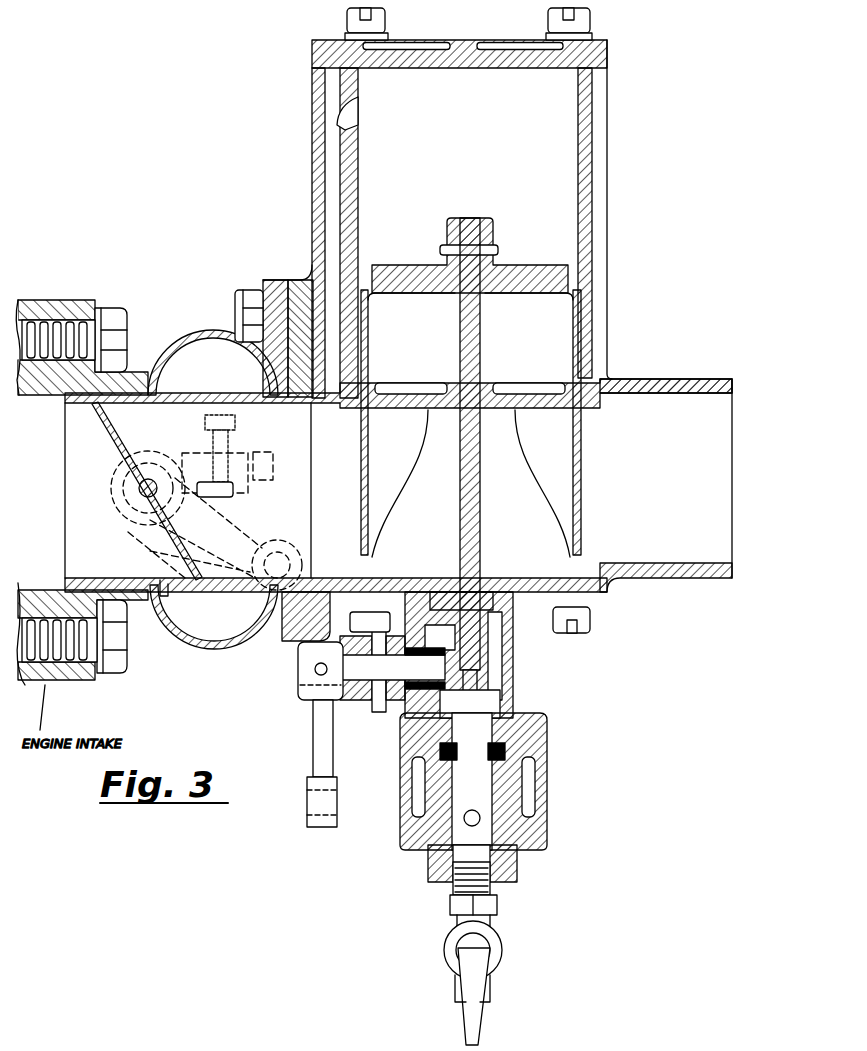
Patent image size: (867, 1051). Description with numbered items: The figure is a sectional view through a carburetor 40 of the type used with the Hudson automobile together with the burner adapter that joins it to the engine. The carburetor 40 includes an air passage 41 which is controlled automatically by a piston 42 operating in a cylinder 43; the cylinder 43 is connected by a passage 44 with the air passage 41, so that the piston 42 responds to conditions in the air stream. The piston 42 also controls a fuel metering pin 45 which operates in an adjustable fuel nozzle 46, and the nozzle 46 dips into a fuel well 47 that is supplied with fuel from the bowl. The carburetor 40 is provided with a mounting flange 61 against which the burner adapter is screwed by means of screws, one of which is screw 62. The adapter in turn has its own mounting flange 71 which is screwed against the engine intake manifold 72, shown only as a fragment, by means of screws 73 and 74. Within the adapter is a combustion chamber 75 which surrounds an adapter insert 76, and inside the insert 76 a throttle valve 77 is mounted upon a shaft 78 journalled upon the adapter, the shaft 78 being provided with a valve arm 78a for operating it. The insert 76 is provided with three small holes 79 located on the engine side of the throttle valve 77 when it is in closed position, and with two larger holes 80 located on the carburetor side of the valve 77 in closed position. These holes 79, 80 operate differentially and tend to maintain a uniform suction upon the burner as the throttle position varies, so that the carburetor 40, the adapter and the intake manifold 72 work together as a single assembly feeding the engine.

The carburetor 40 is at (667, 242).
The air passage 41 is at (712, 433).
The piston 42 is at (530, 267).
The cylinder 43 is at (562, 128).
The passage 44 is at (332, 162).
The fuel metering pin 45 is at (483, 518).
The adjustable fuel nozzle 46 is at (449, 569).
The fuel well 47 is at (527, 813).
The mounting flange 61 is at (307, 627).
The screw 62 is at (246, 304).
The mounting flange 71 is at (88, 678).
The engine intake manifold 72 is at (40, 680).
The screw 73 is at (116, 338).
The screw 74 is at (117, 665).
The combustion chamber 75 is at (215, 622).
The adapter insert 76 is at (200, 395).
The throttle valve 77 is at (120, 436).
The shaft 78 is at (135, 498).
The valve arm 78a is at (247, 527).
The small holes 79 is at (170, 588).
The larger holes 80 is at (253, 588).